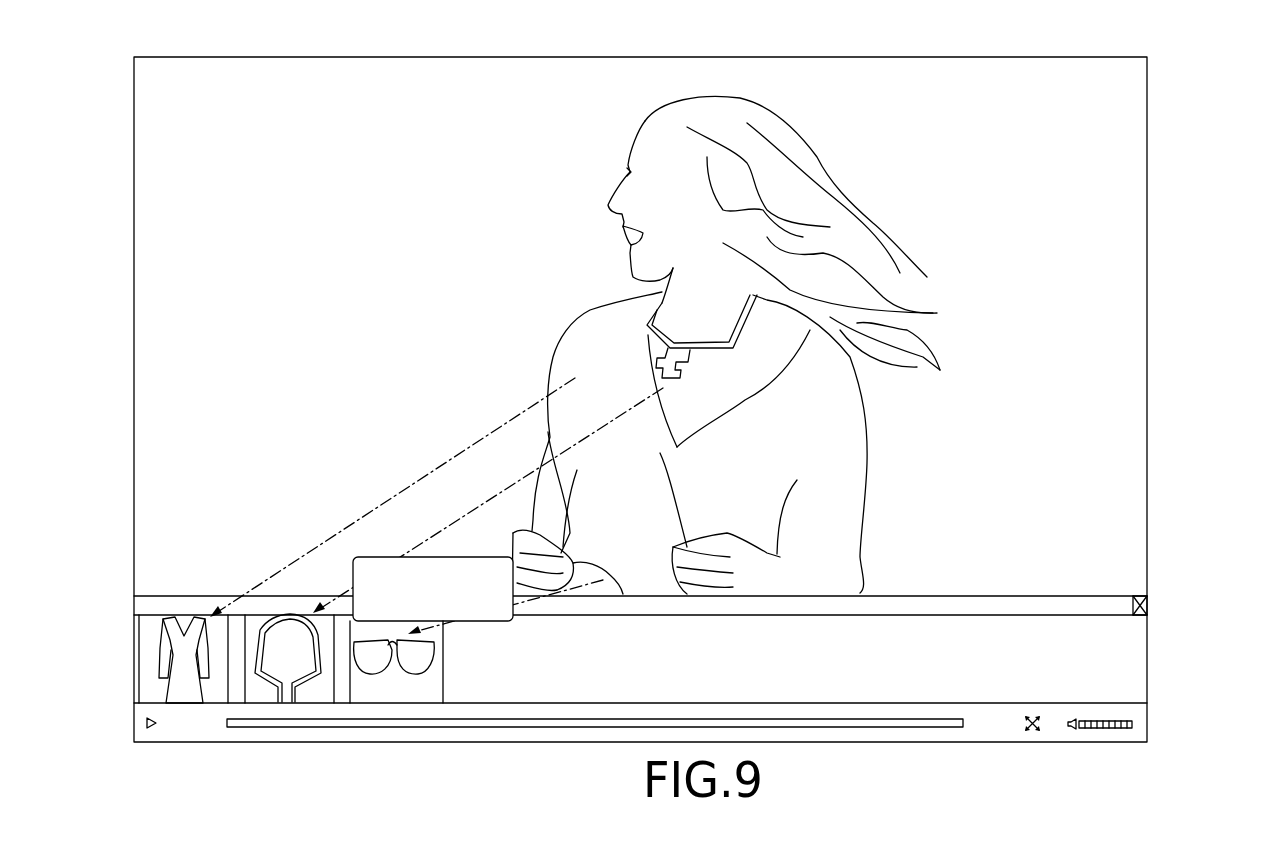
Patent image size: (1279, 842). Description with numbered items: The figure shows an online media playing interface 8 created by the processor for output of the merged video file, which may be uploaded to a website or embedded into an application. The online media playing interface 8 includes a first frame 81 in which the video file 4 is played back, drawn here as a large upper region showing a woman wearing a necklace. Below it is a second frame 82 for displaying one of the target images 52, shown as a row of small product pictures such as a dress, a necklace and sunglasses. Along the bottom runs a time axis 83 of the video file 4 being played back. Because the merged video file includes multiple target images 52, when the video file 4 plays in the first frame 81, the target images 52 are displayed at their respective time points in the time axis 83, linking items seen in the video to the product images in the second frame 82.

The video file 4 is at (1148, 260).
The online media playing interface 8 is at (128, 159).
The first frame 81 is at (1147, 173).
The second frame 82 is at (1147, 657).
The time axis 83 is at (523, 742).
The target image 52 is at (143, 653).